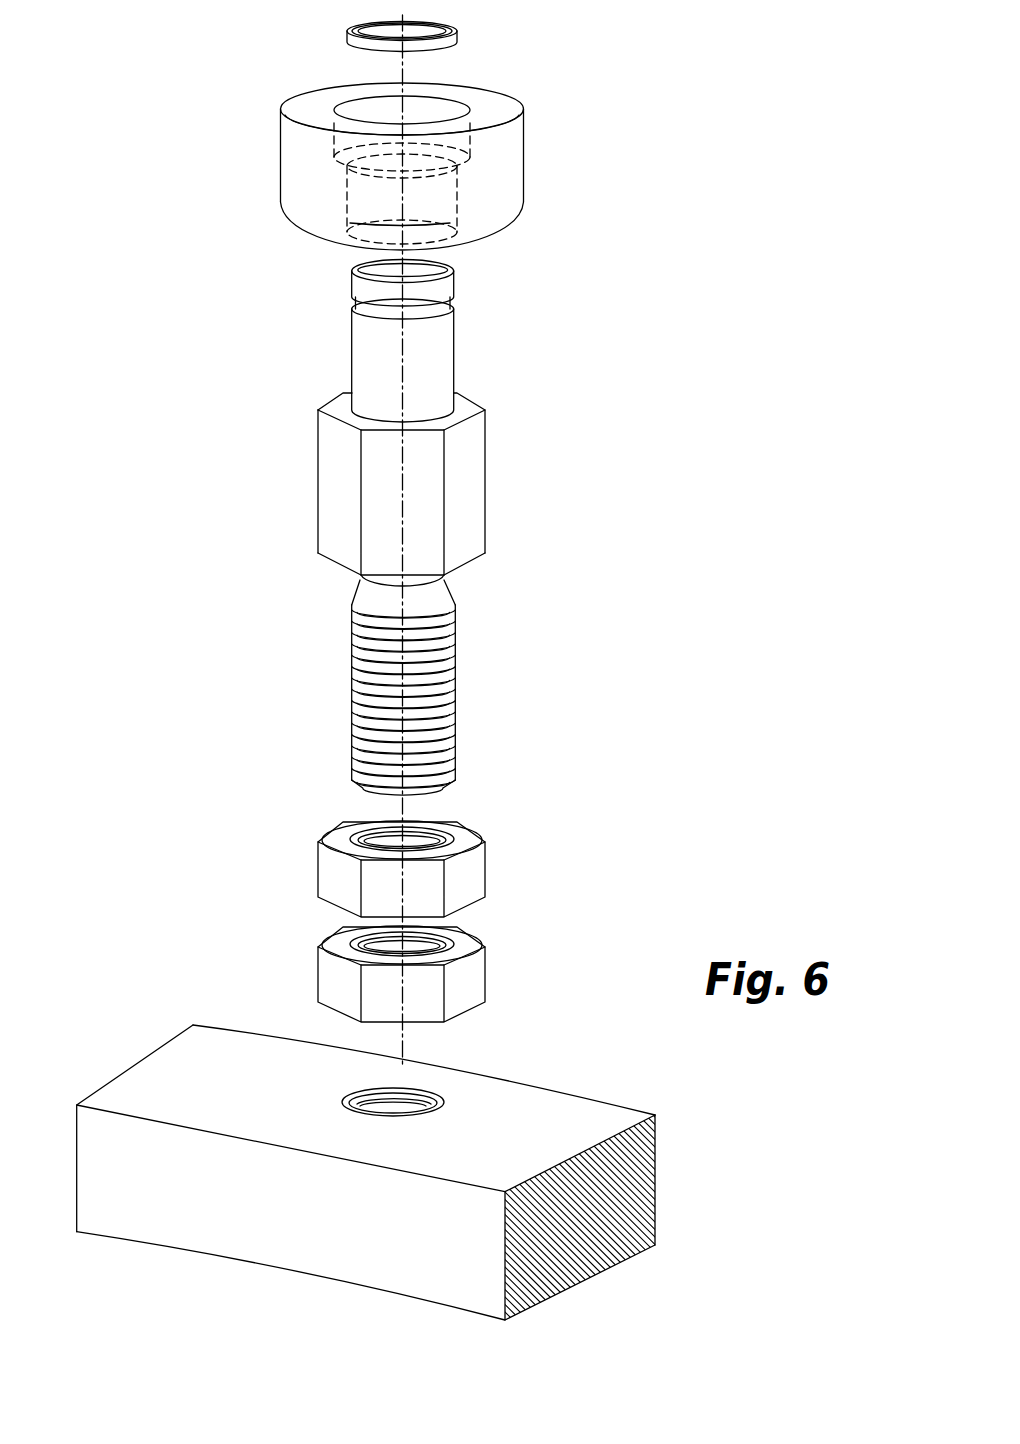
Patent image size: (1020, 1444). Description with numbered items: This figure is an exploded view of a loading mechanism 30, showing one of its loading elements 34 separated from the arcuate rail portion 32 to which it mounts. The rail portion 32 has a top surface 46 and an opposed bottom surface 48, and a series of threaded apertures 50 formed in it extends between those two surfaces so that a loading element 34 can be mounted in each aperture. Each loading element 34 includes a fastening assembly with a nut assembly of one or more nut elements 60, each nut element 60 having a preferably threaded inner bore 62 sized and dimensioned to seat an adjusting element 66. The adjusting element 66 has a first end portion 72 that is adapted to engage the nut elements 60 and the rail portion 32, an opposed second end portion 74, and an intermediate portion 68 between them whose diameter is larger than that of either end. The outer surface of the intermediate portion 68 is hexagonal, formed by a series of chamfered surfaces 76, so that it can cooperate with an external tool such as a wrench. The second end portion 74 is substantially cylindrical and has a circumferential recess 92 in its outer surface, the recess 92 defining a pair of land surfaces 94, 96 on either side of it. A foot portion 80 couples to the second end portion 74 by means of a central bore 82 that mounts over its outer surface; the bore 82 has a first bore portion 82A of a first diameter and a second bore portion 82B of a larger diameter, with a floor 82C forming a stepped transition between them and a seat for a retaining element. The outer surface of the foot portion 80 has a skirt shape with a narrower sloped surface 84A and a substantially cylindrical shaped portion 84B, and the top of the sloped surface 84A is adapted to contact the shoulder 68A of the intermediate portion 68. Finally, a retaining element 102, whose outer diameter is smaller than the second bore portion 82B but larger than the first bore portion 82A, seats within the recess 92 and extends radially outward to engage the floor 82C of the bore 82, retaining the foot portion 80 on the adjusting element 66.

The loading mechanism 30 is at (637, 416).
The rail portion 32 is at (384, 1203).
The loading element 34 is at (252, 652).
The top surface 46 is at (160, 1072).
The bottom surface 48 is at (142, 1245).
The threaded aperture 50 is at (408, 1108).
The nut element 60 is at (427, 899).
The inner bore 62 is at (372, 835).
The adjusting element 66 is at (411, 519).
The intermediate portion 68 is at (361, 473).
The shoulder 68A is at (333, 405).
The first end portion 72 is at (364, 685).
The second end portion 74 is at (421, 333).
The chamfered surface 76 is at (332, 515).
The foot portion 80 is at (404, 162).
The central bore 82 is at (435, 162).
The first bore portion 82A is at (455, 207).
The second bore portion 82B is at (470, 140).
The floor 82C is at (341, 163).
The sloped surface 84A is at (302, 221).
The cylindrical shaped portion 84B is at (281, 138).
The circumferential recess 92 is at (447, 308).
The land surface 94 is at (433, 365).
The land surface 96 is at (447, 285).
The retaining element 102 is at (457, 42).